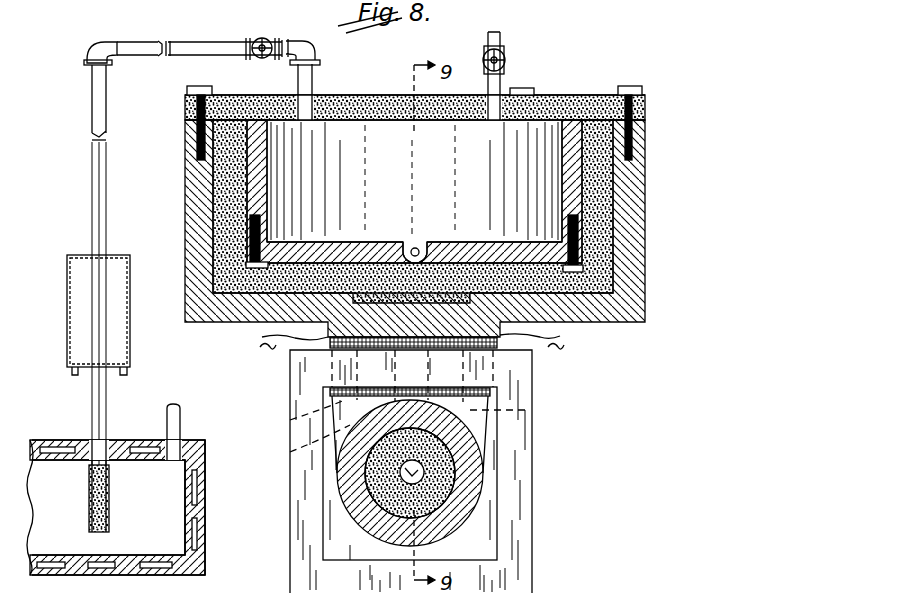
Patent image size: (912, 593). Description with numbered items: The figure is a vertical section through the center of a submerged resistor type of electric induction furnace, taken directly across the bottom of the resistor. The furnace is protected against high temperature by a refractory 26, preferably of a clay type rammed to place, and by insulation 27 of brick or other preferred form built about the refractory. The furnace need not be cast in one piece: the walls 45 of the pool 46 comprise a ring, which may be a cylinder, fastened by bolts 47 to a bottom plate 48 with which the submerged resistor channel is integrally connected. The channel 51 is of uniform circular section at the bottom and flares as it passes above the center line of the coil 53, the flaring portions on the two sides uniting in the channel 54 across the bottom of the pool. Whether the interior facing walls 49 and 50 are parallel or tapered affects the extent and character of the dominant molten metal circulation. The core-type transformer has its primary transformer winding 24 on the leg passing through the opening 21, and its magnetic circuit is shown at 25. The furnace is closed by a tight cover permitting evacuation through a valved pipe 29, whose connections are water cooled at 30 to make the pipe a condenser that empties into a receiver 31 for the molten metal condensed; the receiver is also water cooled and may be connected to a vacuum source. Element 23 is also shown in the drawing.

The opening 21 is at (330, 357).
The liquid 23 is at (418, 348).
The primary transformer winding 24 is at (332, 415).
The magnetic circuit 25 is at (410, 581).
The refractory 26 is at (258, 232).
The insulation 27 is at (222, 280).
The pipe 29 is at (313, 78).
The water cooling 30 is at (128, 332).
The receiver 31 is at (116, 507).
The walls 45 is at (262, 183).
The pool 46 is at (414, 181).
The bolts 47 is at (256, 265).
The bottom plate 48 is at (285, 258).
The interior facing wall 49 is at (345, 440).
The interior facing wall 50 is at (546, 418).
The channel 51 is at (455, 490).
The coil 53 is at (330, 392).
The channel 54 is at (430, 248).